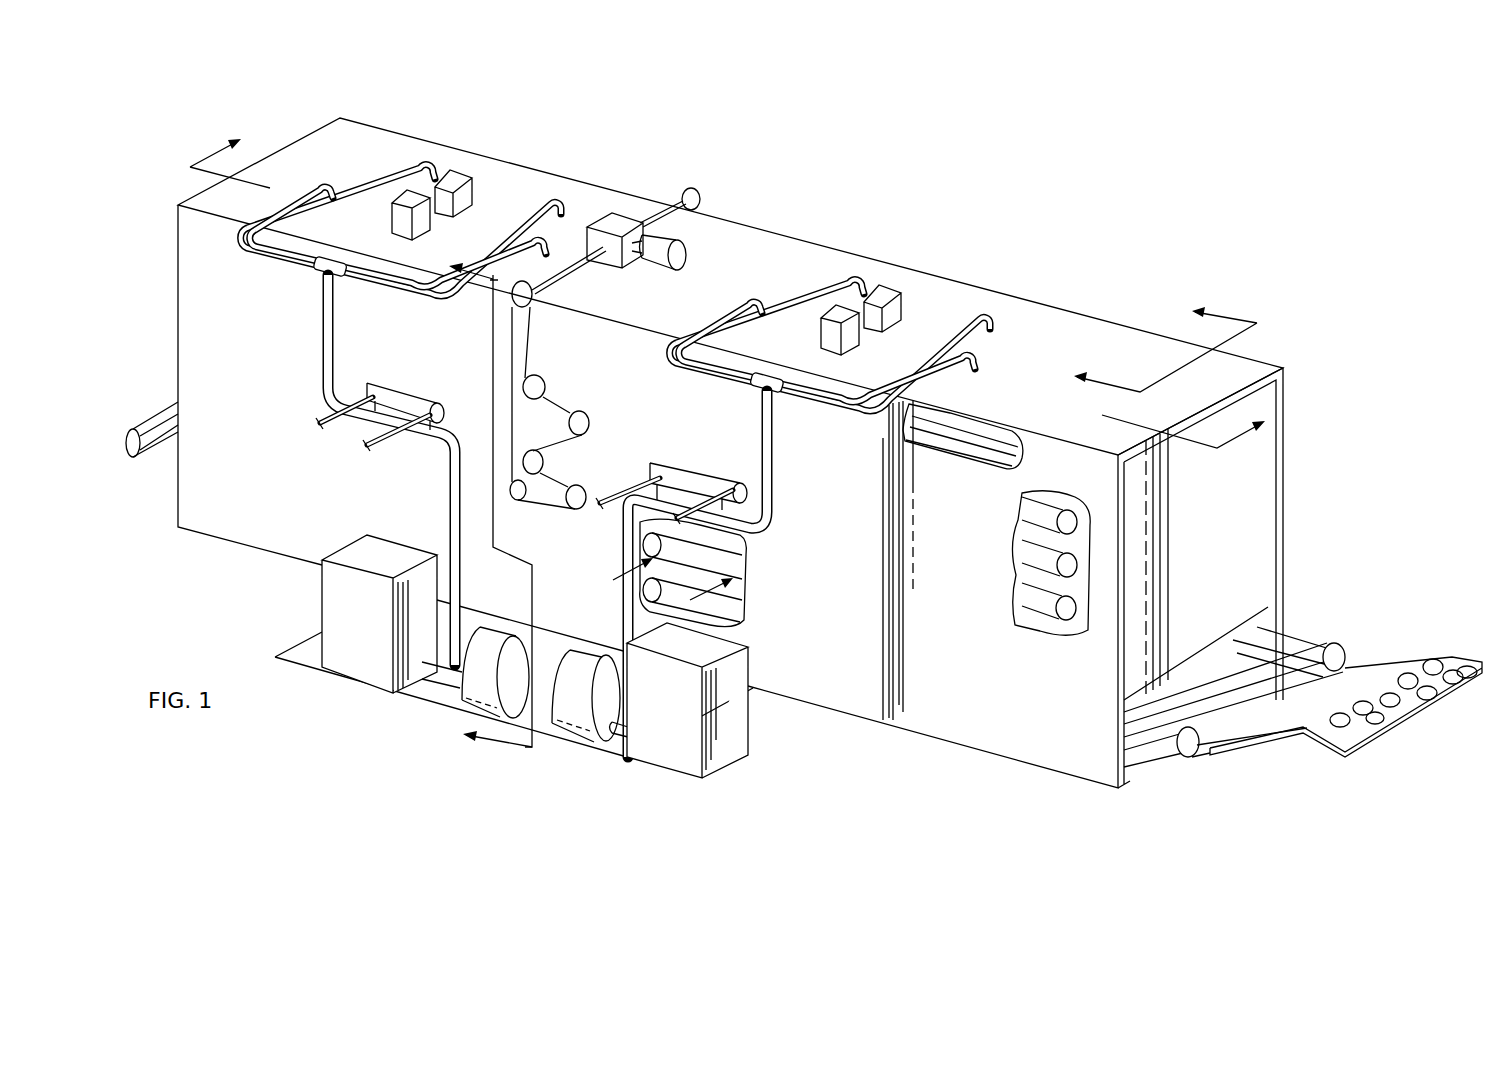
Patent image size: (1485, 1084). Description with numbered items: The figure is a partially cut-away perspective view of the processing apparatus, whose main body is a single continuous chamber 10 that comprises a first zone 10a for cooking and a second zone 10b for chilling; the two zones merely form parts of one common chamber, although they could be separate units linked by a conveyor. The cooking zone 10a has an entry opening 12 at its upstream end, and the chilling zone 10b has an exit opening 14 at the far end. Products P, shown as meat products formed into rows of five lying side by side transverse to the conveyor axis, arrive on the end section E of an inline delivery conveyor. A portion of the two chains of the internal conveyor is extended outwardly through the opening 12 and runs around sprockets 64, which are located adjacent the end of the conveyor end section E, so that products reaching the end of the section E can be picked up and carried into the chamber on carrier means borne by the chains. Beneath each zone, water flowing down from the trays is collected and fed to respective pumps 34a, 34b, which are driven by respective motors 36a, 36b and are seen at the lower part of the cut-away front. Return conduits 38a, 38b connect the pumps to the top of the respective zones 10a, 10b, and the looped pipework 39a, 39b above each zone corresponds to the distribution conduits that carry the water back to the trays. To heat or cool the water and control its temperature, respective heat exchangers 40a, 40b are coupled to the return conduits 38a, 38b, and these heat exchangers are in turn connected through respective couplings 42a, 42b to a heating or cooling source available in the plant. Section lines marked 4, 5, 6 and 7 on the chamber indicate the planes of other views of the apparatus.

The chamber 10 is at (895, 241).
The first zone 10a is at (1017, 328).
The second zone 10b is at (499, 191).
The entry opening 12 is at (1213, 650).
The exit opening 14 is at (163, 404).
The pump 34a is at (563, 710).
The pump 34b is at (470, 690).
The motor 36a is at (688, 697).
The motor 36b is at (347, 647).
The return conduit 38a is at (625, 535).
The return conduit 38b is at (453, 527).
The tube loop assembly 39a is at (795, 293).
The tube loop assembly 39b is at (392, 170).
The heat exchanger 40a is at (695, 480).
The heat exchanger 40b is at (408, 393).
The coupling 42a is at (648, 485).
The coupling 42b is at (327, 418).
The sprockets 64 is at (1188, 755).
The end section E is at (1343, 750).
The products P is at (1408, 681).
The section line 4- 4 is at (727, 282).
The section line 5- 5 is at (490, 507).
The section line 6- 6 is at (1165, 337).
The section line 7- 7 is at (673, 578).